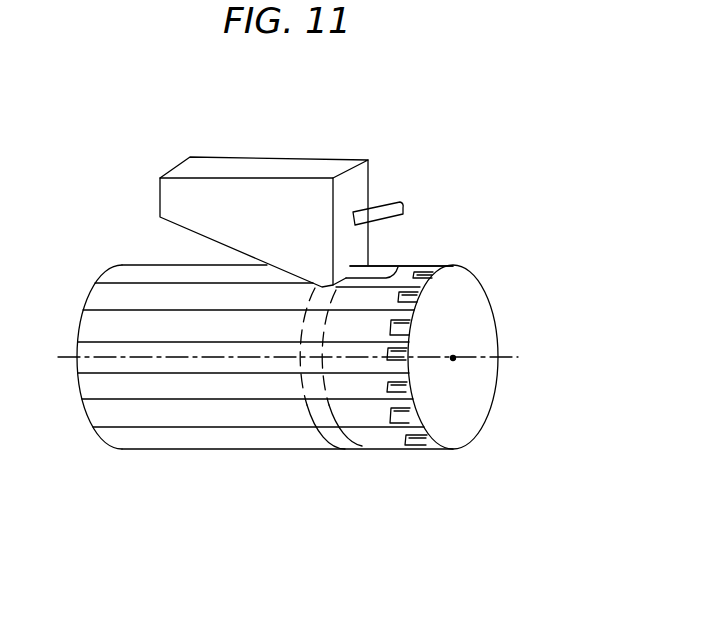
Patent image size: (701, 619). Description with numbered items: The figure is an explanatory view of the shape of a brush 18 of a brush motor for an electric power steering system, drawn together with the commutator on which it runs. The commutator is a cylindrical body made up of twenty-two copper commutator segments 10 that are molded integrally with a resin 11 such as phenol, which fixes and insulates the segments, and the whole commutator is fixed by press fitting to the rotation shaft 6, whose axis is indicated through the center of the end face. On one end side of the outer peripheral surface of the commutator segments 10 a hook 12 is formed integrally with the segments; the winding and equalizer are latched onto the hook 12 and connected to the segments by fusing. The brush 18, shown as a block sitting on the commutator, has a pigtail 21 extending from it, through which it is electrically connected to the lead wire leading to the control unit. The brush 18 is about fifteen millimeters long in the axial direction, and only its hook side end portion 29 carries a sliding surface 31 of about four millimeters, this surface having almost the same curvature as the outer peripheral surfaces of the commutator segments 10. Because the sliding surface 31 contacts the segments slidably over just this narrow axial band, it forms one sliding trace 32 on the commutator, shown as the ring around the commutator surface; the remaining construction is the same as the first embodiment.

The rotation shaft 6 is at (455, 357).
The commutator segments 10 is at (218, 447).
The resin 11 is at (453, 417).
The hook 12 is at (419, 447).
The brush 18 is at (314, 168).
The pigtail 21 is at (380, 204).
The hook side end portion 29 is at (338, 283).
The sliding surface 31 is at (358, 270).
The sliding trace 32 is at (334, 447).